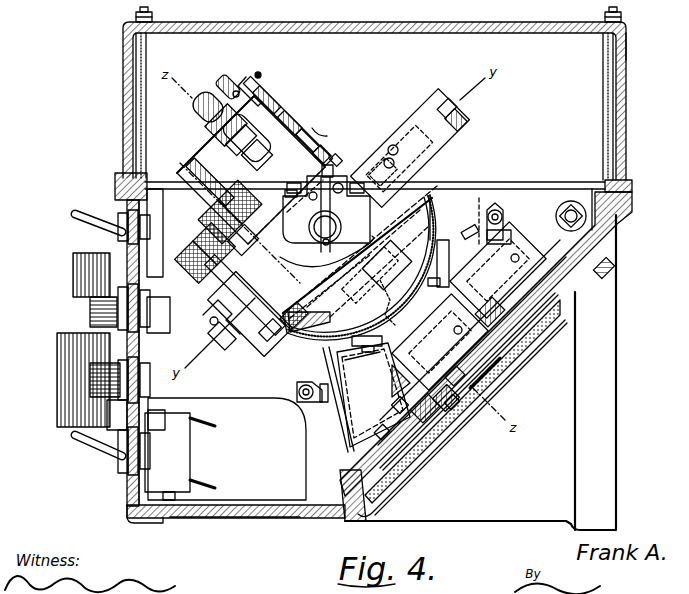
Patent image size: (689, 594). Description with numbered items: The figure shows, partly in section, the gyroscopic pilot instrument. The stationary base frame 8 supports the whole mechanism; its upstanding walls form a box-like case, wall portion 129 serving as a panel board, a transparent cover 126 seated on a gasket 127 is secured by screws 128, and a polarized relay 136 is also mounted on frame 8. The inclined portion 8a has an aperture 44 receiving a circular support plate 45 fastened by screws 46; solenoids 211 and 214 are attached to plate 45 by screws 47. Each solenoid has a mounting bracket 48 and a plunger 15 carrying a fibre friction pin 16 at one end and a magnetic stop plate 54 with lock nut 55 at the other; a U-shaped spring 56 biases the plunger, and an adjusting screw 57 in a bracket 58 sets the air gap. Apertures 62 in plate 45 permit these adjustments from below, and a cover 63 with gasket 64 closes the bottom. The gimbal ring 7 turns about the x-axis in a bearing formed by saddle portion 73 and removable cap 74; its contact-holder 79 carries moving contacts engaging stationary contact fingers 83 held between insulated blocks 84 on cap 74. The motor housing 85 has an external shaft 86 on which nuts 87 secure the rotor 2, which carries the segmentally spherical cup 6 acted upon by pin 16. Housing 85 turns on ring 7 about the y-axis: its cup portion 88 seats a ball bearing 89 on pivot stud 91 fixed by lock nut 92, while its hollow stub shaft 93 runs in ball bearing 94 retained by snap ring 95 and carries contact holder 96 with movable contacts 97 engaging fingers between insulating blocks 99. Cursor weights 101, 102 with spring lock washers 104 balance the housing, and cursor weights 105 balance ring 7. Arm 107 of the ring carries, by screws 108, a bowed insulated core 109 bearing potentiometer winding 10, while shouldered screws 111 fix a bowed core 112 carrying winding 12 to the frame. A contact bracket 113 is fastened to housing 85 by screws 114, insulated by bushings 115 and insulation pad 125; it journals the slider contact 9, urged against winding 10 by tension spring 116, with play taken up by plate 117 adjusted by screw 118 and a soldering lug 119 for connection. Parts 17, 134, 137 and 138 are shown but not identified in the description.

The spinning rotor 2 is at (425, 183).
The segmentally spherical cup 6 is at (427, 212).
The gimbal ring 7 is at (410, 104).
The base frame 8 is at (232, 524).
The inclined portion 8a is at (566, 257).
The slider 9 is at (212, 124).
The potentiometer winding 10 is at (216, 138).
The potentiometer winding 12 is at (333, 402).
The plunger 15 is at (441, 252).
The friction pin 16 is at (430, 280).
The lever 17 is at (387, 280).
The aperture 44 is at (348, 480).
The circular support plate 45 is at (618, 241).
The screws 46 is at (612, 268).
The screws 47 is at (400, 409).
The mounting bracket 48 is at (368, 376).
The magnetic stop plate 54 is at (456, 406).
The lock nut 55 is at (456, 384).
The U-shaped spring 56 is at (492, 364).
The adjusting screw 57 is at (483, 272).
The bracket 58 is at (488, 292).
The apertures 62 is at (523, 345).
The cover 63 is at (400, 465).
The gasket 64 is at (408, 443).
The saddle portion 73 is at (290, 235).
The removable cap 74 is at (283, 195).
The contact-holder 79 is at (316, 247).
The stationary contact fingers 83 is at (320, 172).
The insulated blocks 84 is at (293, 190).
The motor housing 85 is at (320, 132).
The external shaft 86 is at (395, 262).
The nuts 87 is at (360, 322).
The cup portion 88 is at (386, 158).
The ball bearing 89 is at (391, 144).
The pivot stud 91 is at (462, 116).
The lock nut 92 is at (442, 103).
The hollow stub shaft 93 is at (258, 250).
The ball bearing 94 is at (270, 296).
The snap ring 95 is at (268, 332).
The contact holder 96 is at (262, 343).
The movable contacts 97 is at (212, 336).
The insulating blocks 99 is at (214, 314).
The cursor weight 101 is at (212, 207).
The cursor weight 102 is at (342, 222).
The spring lock washer 104 is at (213, 225).
The cursor weights 105 is at (200, 258).
The upstanding arm 107 is at (268, 160).
The screws 108 is at (228, 178).
The bowed insulated core 109 is at (197, 106).
The shouldered screws 111 is at (499, 206).
The bowed insulated core 112 is at (508, 238).
The contact bracket 113 is at (316, 130).
The screws 114 is at (286, 104).
The bushings 115 is at (295, 113).
The light tension spring 116 is at (270, 92).
The plate 117 is at (242, 80).
The screw 118 is at (222, 80).
The soldering lug 119 is at (337, 158).
The insulation pad 125 is at (262, 143).
The cover 126 is at (628, 33).
The gasket 127 is at (633, 188).
The screws 128 is at (136, 17).
The upstanding wall portion 129 is at (115, 190).
The bearing 134 is at (571, 201).
The polarized relay 136 is at (258, 403).
The plate 137 is at (330, 370).
The contact 138 is at (470, 228).
The solenoid 211 is at (479, 214).
The solenoid 214 is at (365, 380).